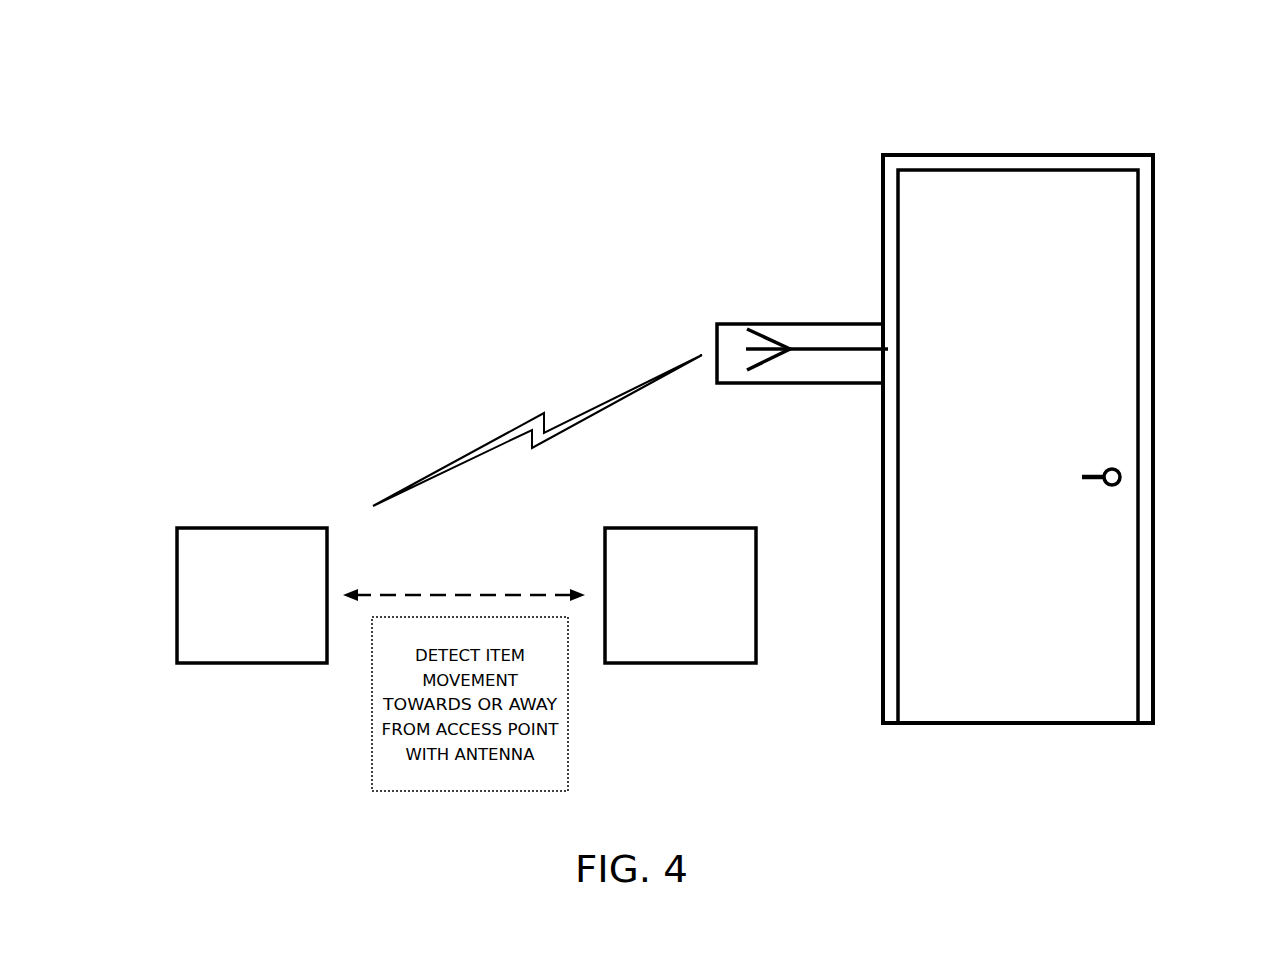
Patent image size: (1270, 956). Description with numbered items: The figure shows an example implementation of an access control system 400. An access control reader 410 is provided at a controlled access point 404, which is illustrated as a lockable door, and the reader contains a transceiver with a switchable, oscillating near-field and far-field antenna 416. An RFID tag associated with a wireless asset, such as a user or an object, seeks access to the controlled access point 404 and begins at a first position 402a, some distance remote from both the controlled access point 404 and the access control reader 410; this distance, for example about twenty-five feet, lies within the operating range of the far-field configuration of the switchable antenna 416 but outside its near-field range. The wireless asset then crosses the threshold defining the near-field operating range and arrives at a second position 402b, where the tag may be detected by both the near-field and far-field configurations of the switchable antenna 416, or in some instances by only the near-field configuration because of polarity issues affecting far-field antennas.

The access control system 400 is at (1168, 62).
The first position 402a is at (186, 520).
The second position 402b is at (623, 518).
The controlled access point 404 is at (1115, 296).
The access control reader 410 is at (833, 385).
The switchable antenna 416 is at (770, 332).